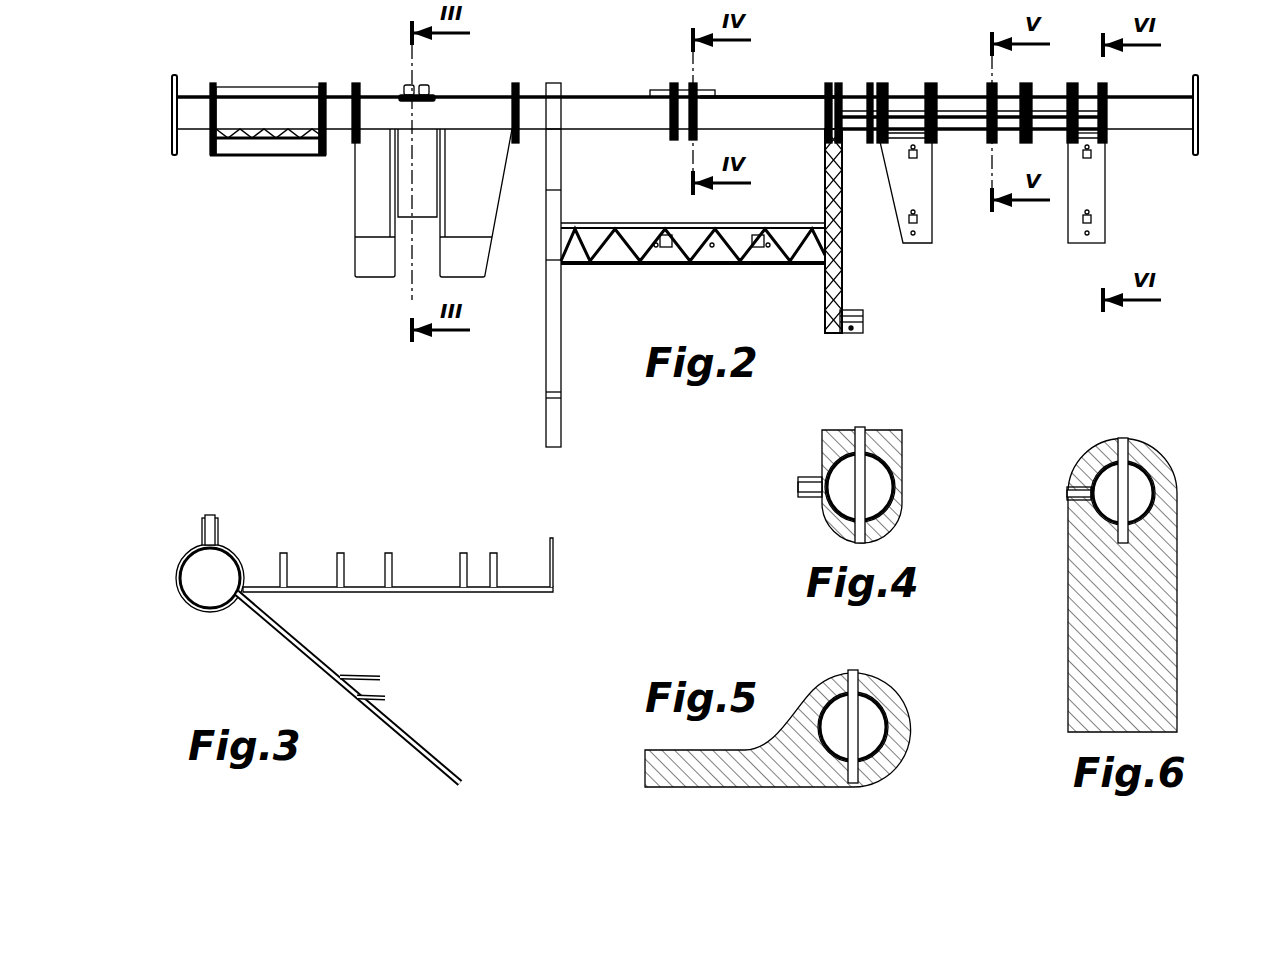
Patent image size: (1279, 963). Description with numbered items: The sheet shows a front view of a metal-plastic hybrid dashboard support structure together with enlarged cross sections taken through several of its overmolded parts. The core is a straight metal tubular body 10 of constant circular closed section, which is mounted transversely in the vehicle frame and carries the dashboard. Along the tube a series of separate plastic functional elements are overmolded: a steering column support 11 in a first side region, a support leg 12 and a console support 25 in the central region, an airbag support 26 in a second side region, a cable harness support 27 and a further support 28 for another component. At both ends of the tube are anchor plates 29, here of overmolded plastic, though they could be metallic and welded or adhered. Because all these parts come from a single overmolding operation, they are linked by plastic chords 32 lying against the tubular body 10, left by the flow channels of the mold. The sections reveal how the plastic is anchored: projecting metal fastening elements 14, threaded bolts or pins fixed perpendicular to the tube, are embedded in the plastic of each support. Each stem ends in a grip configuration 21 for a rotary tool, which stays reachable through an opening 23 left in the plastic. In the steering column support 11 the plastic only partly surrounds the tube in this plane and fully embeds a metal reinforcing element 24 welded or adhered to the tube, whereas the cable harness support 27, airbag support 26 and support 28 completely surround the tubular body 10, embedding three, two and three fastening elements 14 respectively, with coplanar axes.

In FIG. 2, the metal tubular body 10 is at (624, 127).
In FIG. 3, the metal tubular body 10 is at (190, 606).
In FIG. 4, the metal tubular body 10 is at (895, 473).
In FIG. 5, the metal tubular body 10 is at (885, 720).
In FIG. 6, the metal tubular body 10 is at (1152, 485).
In FIG. 2, the steering column support 11 is at (362, 218).
In FIG. 3, the steering column support 11 is at (414, 585).
In FIG. 2, the support leg 12 is at (548, 376).
In FIG. 3, the projecting metal fastening elements 14 is at (215, 530).
In FIG. 4, the projecting metal fastening elements 14 is at (865, 442).
In FIG. 5, the projecting metal fastening elements 14 is at (858, 686).
In FIG. 6, the projecting metal fastening elements 14 is at (1128, 452).
In FIG. 3, the grip configuration 21 is at (210, 518).
In FIG. 4, the grip configuration 21 is at (860, 427).
In FIG. 5, the grip configuration 21 is at (853, 670).
In FIG. 6, the grip configuration 21 is at (1125, 438).
In FIG. 3, the opening 23 is at (203, 522).
In FIG. 4, the opening 23 is at (855, 428).
In FIG. 5, the opening 23 is at (848, 672).
In FIG. 6, the opening 23 is at (1118, 440).
In FIG. 3, the metal reinforcing element 24 is at (425, 745).
In FIG. 2, the console support 25 is at (742, 263).
In FIG. 2, the airbag support 26 is at (985, 82).
In FIG. 5, the airbag support 26 is at (652, 768).
In FIG. 2, the cable harness support 27 is at (662, 92).
In FIG. 4, the cable harness support 27 is at (900, 512).
In FIG. 2, the support 28 is at (1068, 218).
In FIG. 6, the support 28 is at (1082, 693).
In FIG. 2, the anchor plates 29 is at (172, 113).
In FIG. 2, the plastic chords 32 is at (780, 93).